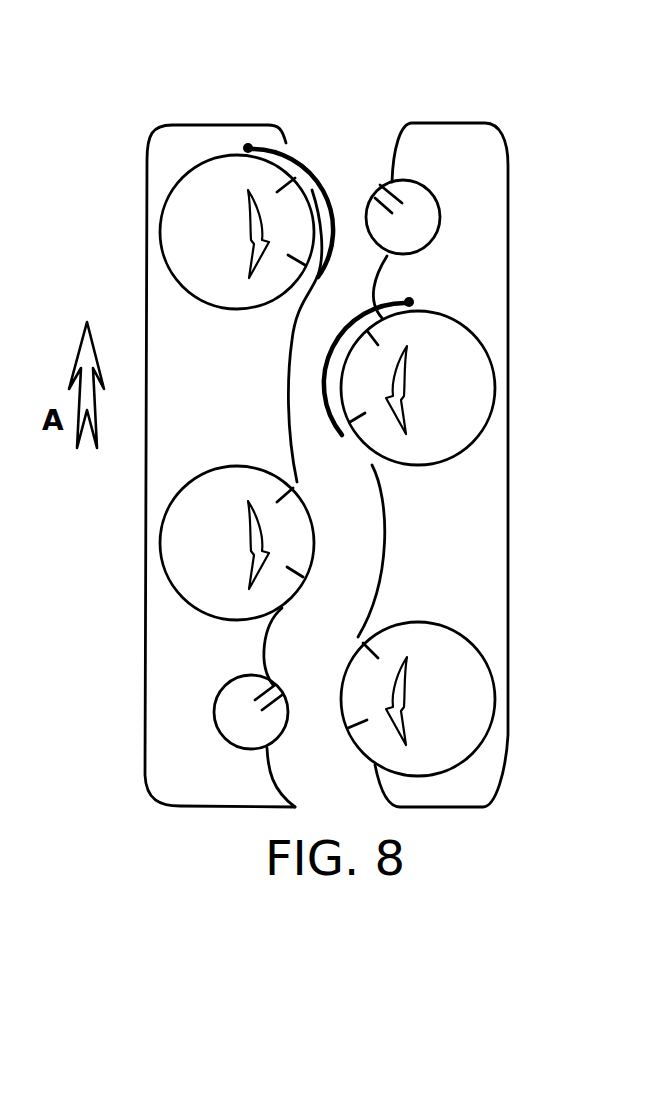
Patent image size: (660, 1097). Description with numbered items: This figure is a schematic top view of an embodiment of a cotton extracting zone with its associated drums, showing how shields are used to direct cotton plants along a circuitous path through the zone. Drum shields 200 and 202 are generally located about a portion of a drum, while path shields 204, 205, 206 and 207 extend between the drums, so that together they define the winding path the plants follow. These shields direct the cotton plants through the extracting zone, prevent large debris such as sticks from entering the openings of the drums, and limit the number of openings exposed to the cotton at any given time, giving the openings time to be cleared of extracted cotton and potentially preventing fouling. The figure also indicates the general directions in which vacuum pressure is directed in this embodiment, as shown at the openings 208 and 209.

The drum shield 200 is at (311, 188).
The drum shield 202 is at (348, 343).
The path shield 204 is at (288, 414).
The path shield 205 is at (372, 285).
The path shield 206 is at (388, 537).
The path shield 207 is at (263, 650).
The opening 208 is at (277, 690).
The opening 209 is at (349, 708).